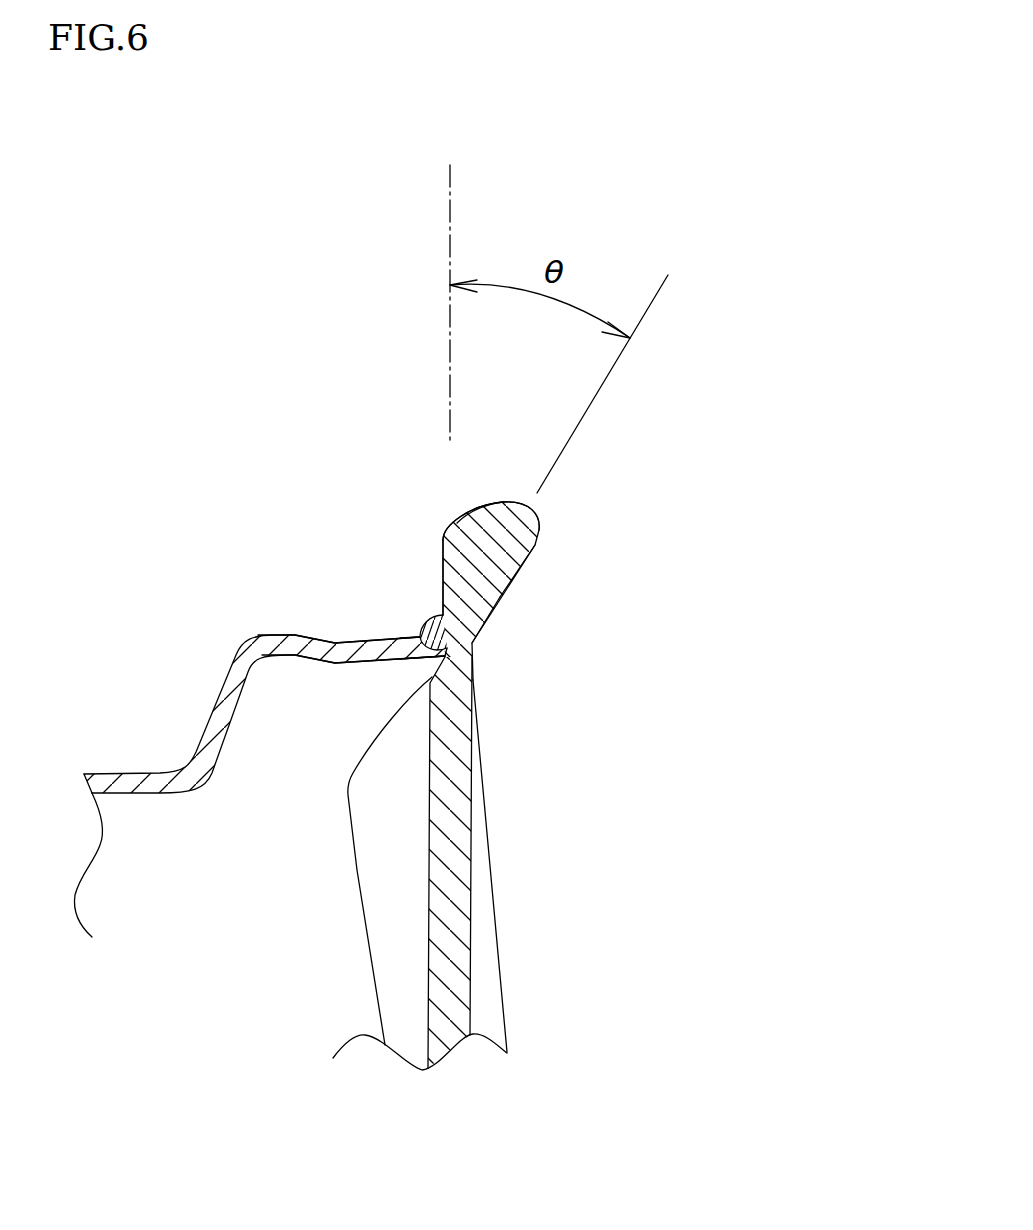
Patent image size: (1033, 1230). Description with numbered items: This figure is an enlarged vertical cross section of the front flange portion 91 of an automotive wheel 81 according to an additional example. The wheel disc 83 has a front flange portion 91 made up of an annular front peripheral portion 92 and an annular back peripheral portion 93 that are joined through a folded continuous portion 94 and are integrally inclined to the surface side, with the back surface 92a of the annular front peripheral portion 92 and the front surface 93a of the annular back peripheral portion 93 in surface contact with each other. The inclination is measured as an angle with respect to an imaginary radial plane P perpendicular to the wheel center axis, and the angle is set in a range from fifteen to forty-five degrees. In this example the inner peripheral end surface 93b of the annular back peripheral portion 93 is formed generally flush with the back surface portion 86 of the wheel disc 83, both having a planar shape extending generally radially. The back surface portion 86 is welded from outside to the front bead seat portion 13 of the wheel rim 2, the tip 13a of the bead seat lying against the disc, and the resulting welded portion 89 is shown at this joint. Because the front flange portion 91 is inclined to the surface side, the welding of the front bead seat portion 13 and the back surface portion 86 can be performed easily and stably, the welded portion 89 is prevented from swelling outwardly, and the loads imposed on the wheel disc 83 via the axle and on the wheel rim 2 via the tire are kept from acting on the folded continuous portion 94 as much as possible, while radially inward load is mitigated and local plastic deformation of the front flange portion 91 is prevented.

The wheel rim 2 is at (135, 783).
The front bead seat portion 13 is at (318, 645).
The tip end of flange 13a is at (437, 661).
The automotive wheel 81 is at (569, 705).
The wheel disc 83 is at (462, 878).
The back surface portion 86 is at (425, 665).
The welded portion 89 is at (430, 627).
The front flange portion 91 is at (522, 537).
The annular front peripheral portion 92 is at (497, 575).
The back surface of the annular front peripheral portion 92a is at (463, 533).
The annular back peripheral portion 93 is at (485, 553).
The front surface of the annular back peripheral portion 93a is at (487, 616).
The inner peripheral end surface 93b is at (438, 570).
The folded continuous portion 94 is at (503, 500).
The imaginary radial plane P is at (447, 240).